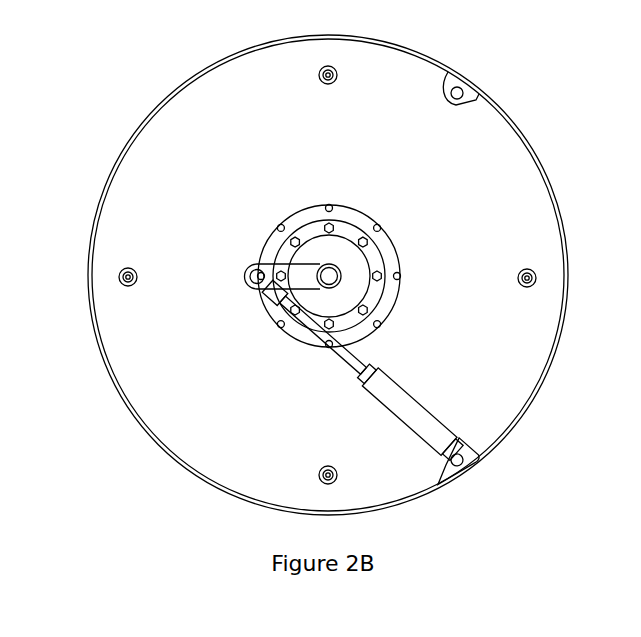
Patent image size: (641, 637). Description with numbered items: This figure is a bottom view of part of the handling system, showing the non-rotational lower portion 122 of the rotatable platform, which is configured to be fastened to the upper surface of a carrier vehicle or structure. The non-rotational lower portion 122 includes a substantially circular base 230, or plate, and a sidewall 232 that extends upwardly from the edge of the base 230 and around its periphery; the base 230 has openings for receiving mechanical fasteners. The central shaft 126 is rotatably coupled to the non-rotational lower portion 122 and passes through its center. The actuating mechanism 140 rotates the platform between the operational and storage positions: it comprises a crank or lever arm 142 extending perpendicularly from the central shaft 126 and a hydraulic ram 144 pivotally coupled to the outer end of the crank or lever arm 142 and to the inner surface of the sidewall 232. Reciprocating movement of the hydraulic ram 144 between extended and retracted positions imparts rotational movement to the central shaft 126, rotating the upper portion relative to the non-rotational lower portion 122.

The non-rotational lower portion 122 is at (128, 118).
The central shaft 126 is at (337, 272).
The actuating mechanism 140 is at (414, 380).
The crank or lever arm 142 is at (303, 274).
The hydraulic ram 144 is at (345, 349).
The base 230 is at (232, 170).
The sidewall 232 is at (90, 312).